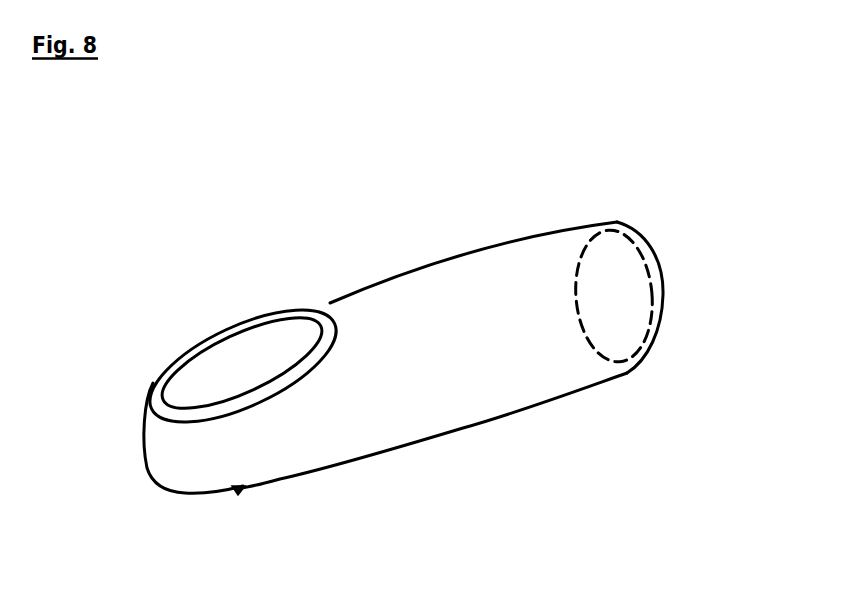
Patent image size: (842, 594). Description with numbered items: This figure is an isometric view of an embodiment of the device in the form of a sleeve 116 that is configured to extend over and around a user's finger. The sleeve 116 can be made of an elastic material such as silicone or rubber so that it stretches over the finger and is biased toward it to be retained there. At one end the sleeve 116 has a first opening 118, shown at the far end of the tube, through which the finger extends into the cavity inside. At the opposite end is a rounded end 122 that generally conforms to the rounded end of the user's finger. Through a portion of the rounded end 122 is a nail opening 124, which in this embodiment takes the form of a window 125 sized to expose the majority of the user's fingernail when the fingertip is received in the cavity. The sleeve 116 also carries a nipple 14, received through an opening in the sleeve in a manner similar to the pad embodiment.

The nipple 14 is at (238, 492).
The sleeve 116 is at (478, 238).
The first opening 118 is at (618, 287).
The rounded end 122 is at (177, 452).
The nail opening 124 is at (213, 338).
The window 125 is at (267, 353).